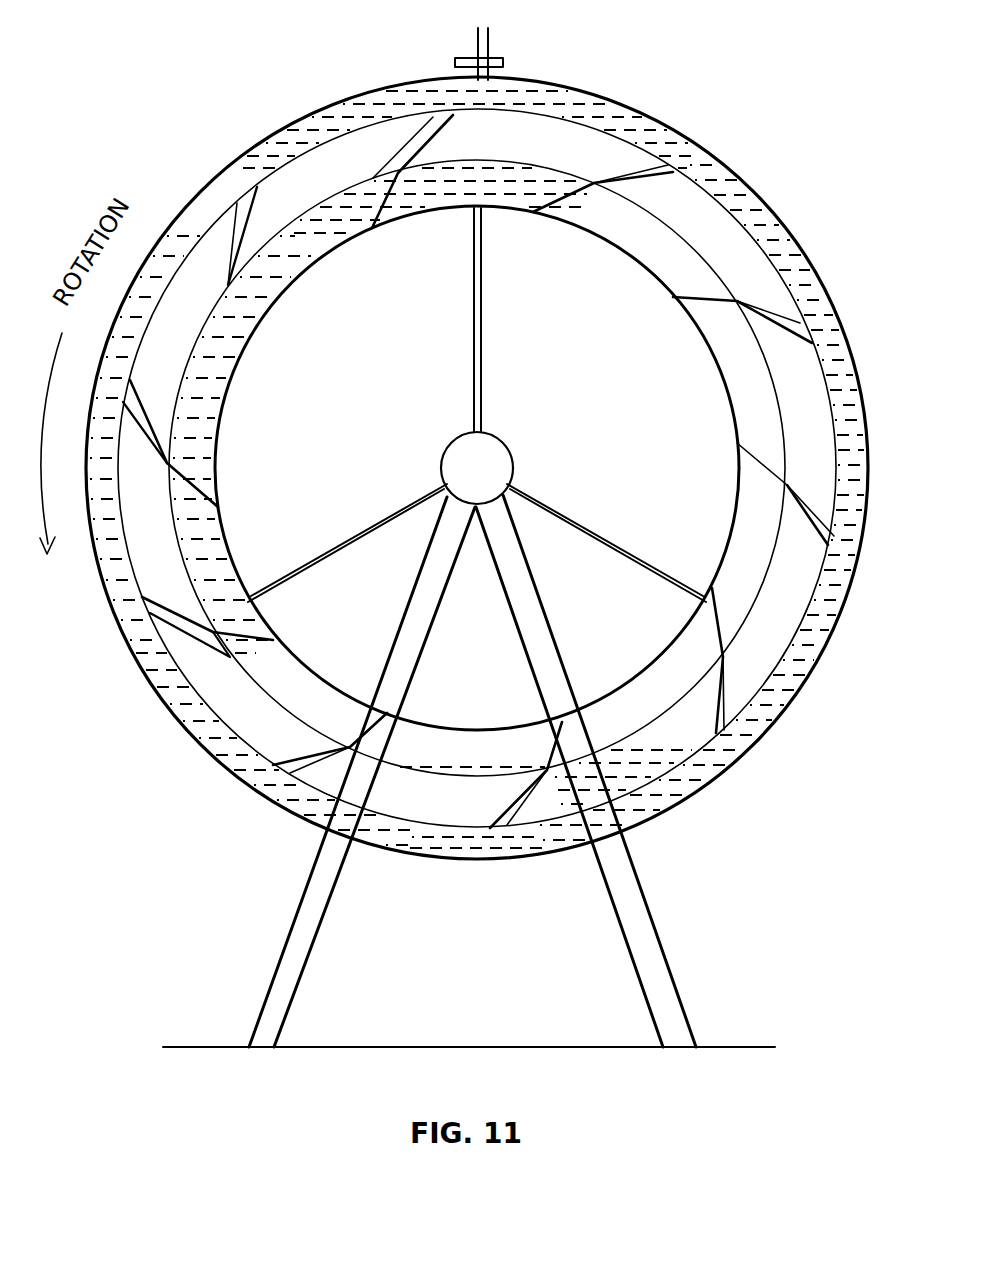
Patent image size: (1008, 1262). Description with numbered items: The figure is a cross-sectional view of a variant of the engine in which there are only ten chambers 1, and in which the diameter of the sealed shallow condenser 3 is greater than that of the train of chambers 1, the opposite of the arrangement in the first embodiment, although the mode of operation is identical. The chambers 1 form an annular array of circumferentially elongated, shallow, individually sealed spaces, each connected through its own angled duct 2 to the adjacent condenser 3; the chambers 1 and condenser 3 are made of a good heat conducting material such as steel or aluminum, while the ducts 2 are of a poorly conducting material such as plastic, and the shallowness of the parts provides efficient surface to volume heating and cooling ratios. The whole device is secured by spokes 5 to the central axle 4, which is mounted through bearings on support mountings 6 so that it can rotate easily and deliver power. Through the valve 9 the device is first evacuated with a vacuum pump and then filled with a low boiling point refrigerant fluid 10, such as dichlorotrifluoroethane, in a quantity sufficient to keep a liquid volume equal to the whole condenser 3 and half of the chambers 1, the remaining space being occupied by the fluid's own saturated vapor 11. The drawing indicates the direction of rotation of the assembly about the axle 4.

The chamber 1 is at (222, 434).
The angled duct 2 is at (434, 142).
The condenser 3 is at (700, 806).
The axle 4 is at (452, 456).
The spoke 5 is at (352, 544).
The support mounting 6 is at (540, 672).
The valve 9 is at (500, 62).
The refrigerant fluid 10 is at (332, 120).
The saturated vapor 11 is at (660, 258).